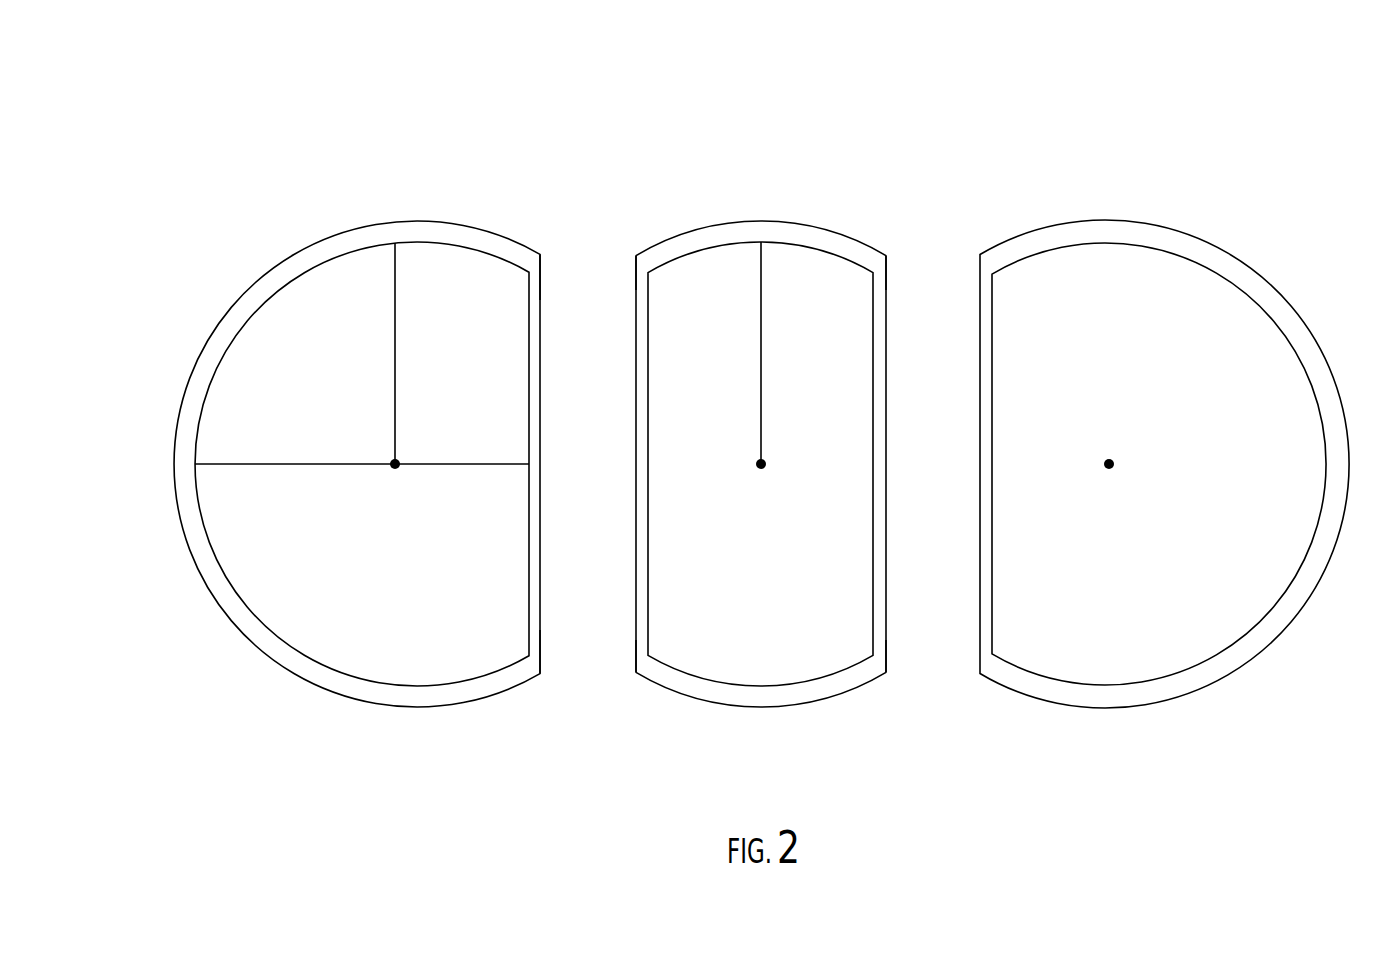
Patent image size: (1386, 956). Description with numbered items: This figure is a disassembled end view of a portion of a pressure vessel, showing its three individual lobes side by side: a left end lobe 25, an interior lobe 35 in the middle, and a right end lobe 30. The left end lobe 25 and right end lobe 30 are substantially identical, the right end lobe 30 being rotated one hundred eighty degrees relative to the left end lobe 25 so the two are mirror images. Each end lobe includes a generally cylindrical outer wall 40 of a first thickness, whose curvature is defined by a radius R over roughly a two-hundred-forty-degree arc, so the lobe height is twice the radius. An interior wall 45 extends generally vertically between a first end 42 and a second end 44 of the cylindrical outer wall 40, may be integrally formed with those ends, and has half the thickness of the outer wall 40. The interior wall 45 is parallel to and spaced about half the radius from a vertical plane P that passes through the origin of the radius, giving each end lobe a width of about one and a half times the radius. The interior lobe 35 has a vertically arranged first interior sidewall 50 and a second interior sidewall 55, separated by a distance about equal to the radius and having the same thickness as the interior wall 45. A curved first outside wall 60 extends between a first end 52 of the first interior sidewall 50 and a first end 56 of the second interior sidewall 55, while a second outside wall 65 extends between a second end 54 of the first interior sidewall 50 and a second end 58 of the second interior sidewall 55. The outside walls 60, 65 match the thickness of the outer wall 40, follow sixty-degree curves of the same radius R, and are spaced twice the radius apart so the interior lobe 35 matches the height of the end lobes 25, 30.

The left end lobe 25 is at (252, 134).
The right end lobe 30 is at (1255, 150).
The interior lobe 35 is at (758, 100).
The cylindrical outer wall 40 is at (345, 693).
The first end 42 is at (541, 258).
The second end 44 is at (541, 654).
The interior wall 45 is at (529, 552).
The first interior sidewall 50 is at (648, 405).
The first end 52 is at (637, 266).
The second end 54 is at (636, 672).
The second interior sidewall 55 is at (873, 484).
The first end 56 is at (887, 270).
The second end 58 is at (886, 647).
The first outside wall 60 is at (800, 228).
The second outside wall 65 is at (755, 705).